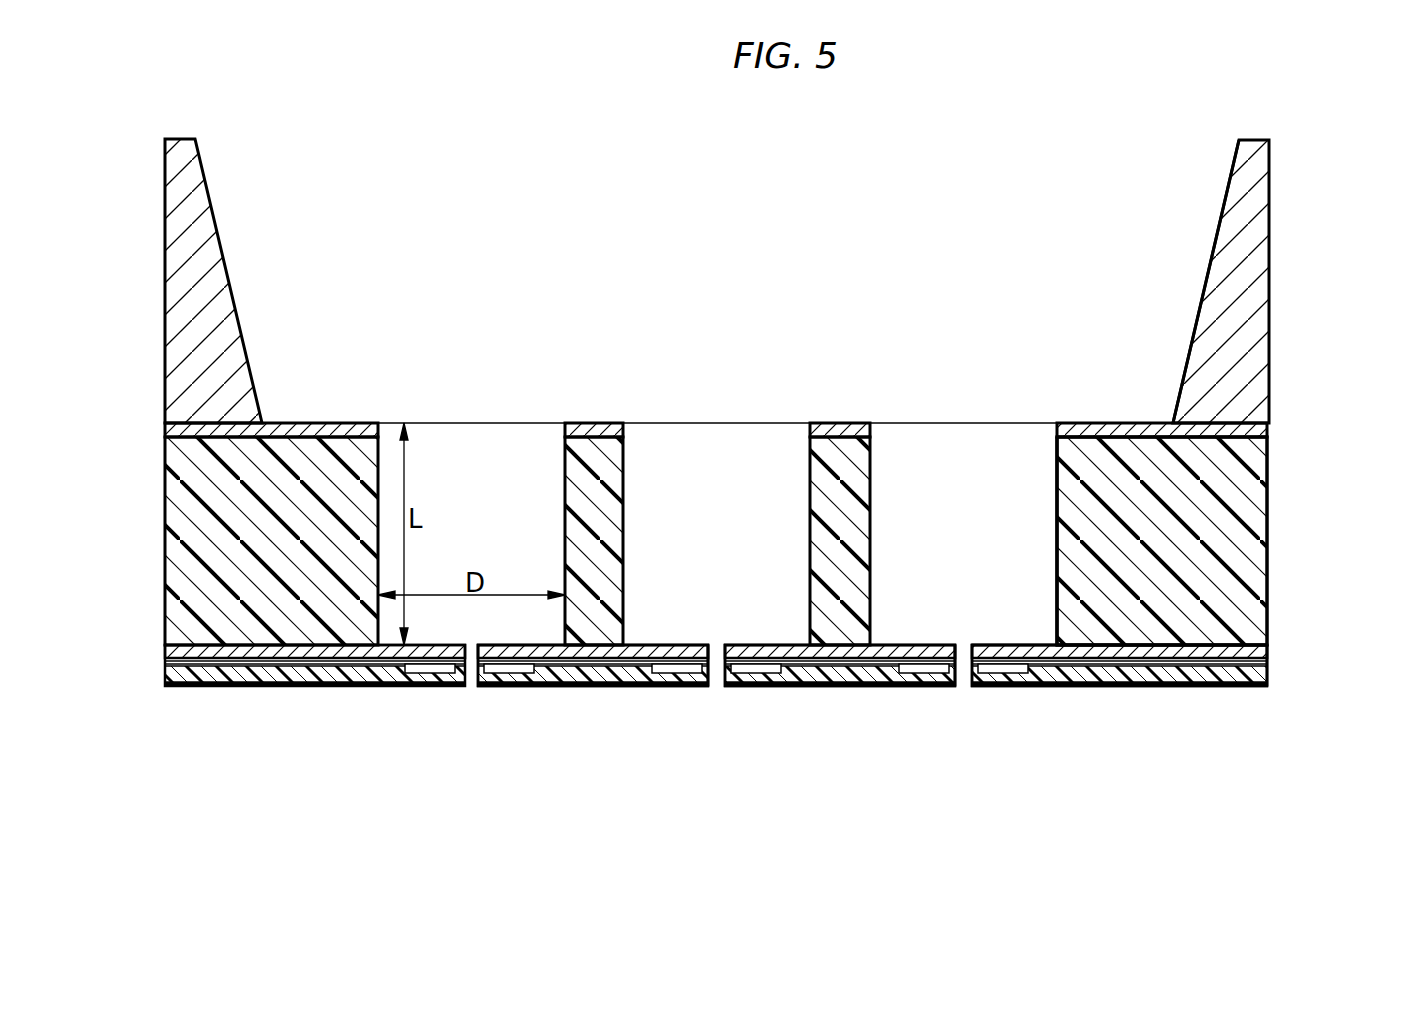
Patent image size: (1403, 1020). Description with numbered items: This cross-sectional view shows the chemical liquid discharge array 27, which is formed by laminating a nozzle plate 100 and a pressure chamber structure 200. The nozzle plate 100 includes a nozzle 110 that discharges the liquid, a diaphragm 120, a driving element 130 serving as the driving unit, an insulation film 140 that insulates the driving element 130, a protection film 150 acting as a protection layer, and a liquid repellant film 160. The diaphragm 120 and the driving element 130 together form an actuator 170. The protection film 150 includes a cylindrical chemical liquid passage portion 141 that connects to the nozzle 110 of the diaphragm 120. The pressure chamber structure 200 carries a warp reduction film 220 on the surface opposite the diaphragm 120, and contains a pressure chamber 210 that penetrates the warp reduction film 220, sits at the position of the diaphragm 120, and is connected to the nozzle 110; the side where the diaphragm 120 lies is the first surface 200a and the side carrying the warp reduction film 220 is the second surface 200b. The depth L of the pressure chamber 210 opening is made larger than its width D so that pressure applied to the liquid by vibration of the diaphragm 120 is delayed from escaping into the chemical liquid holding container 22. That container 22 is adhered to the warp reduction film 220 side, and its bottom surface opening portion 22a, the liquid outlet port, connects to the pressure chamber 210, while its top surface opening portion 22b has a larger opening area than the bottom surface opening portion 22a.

The chemical liquid holding container 22 is at (1270, 168).
The bottom surface opening portion 22a is at (1159, 398).
The top surface opening portion 22b is at (1192, 162).
The pressure chamber structure 200 is at (1255, 528).
The first surface 200a is at (1118, 686).
The second surface 200b is at (1082, 433).
The pressure chamber 210 is at (1030, 478).
The warp reduction film 220 is at (1270, 430).
The nozzle plate 100 is at (784, 675).
The nozzle 110 is at (720, 650).
The diaphragm 120 is at (1268, 652).
The driving element 130 is at (435, 688).
The insulation film 140 is at (1268, 662).
The chemical liquid passage portion 141 is at (966, 668).
The protection film 150 is at (1268, 676).
The liquid repellant film 160 is at (759, 715).
The actuator 170 is at (532, 740).
The chemical liquid discharge array 27 is at (1252, 718).